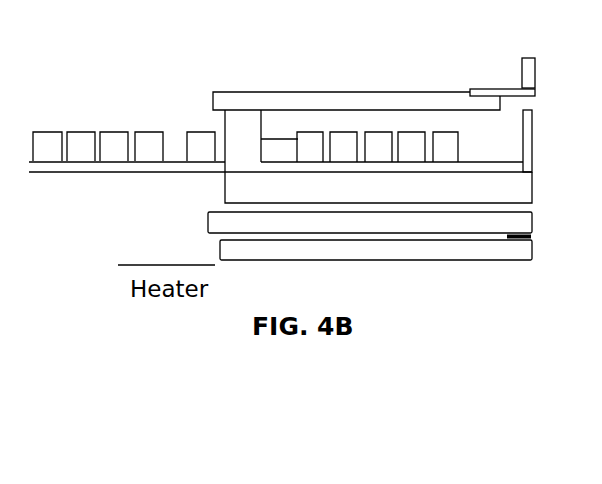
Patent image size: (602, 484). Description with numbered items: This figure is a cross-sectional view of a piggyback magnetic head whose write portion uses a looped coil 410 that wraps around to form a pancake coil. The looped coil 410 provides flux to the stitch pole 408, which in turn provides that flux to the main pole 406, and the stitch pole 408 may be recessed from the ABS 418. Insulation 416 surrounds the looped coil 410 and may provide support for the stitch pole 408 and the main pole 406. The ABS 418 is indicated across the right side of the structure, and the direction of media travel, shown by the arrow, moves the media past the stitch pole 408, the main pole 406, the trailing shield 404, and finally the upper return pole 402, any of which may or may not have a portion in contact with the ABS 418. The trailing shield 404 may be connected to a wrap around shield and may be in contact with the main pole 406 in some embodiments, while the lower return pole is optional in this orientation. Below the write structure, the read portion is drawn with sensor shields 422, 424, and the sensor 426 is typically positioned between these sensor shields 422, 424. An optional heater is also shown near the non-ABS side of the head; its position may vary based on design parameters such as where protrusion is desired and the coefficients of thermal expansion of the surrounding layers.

The upper return pole 402 is at (537, 70).
The trailing shield 404 is at (533, 145).
The main pole 406 is at (504, 88).
The stitch pole 408 is at (381, 92).
The looped coil 410 is at (438, 133).
The insulation 416 is at (378, 187).
The ABS 418 is at (533, 190).
The sensor shield 422 is at (208, 222).
The sensor shield 424 is at (220, 245).
The sensor 426 is at (530, 233).